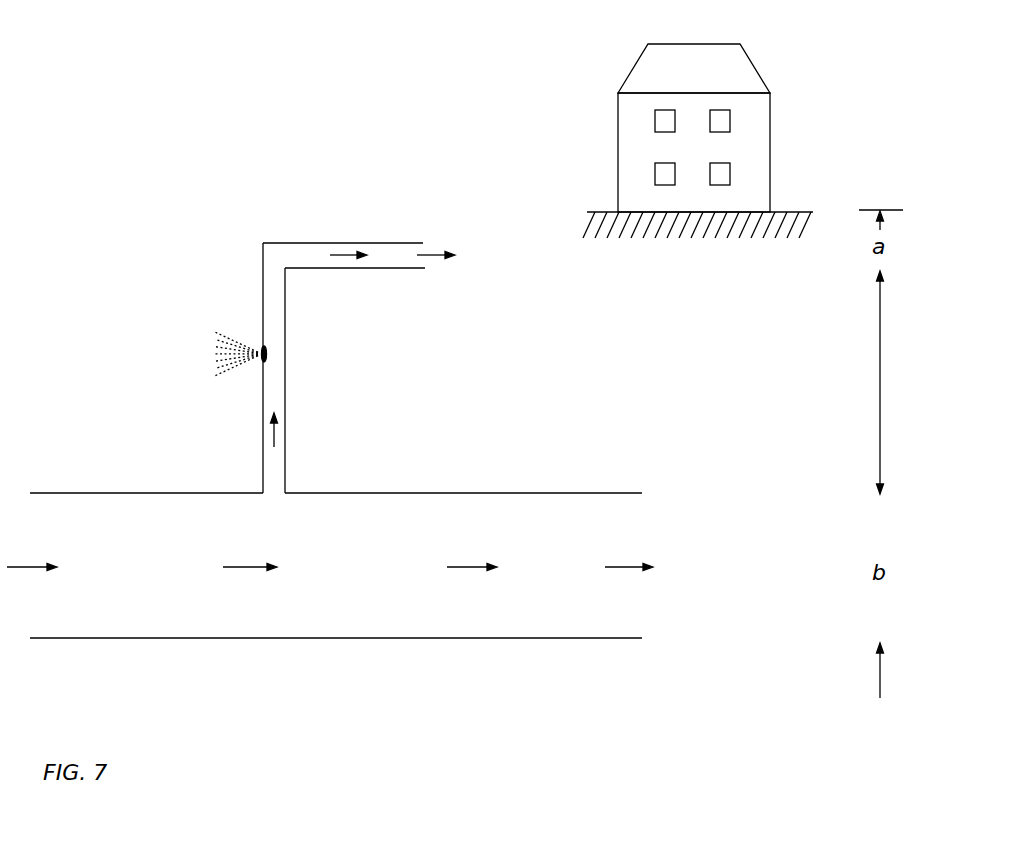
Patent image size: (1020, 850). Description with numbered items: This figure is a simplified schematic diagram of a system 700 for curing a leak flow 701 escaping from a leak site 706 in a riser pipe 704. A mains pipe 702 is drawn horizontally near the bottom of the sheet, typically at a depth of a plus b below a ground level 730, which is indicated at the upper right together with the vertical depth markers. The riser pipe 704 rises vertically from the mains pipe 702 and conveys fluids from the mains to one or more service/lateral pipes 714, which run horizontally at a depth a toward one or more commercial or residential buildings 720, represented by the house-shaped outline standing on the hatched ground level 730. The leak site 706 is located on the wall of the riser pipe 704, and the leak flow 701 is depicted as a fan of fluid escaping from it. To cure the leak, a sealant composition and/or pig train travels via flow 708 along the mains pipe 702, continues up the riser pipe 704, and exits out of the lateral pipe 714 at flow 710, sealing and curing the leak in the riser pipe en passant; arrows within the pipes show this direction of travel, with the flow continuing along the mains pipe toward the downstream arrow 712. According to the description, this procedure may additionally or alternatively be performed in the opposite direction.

The system 700 is at (238, 115).
The leak flow 701 is at (212, 339).
The mains pipe 702 is at (567, 492).
The riser pipe 704 is at (286, 428).
The leak site 706 is at (262, 365).
The flow 708 is at (56, 569).
The flow 710 is at (459, 257).
The outlet air flow 712 is at (652, 570).
The service/lateral pipe 714 is at (375, 242).
The building 720 is at (758, 62).
The ground level 730 is at (595, 210).